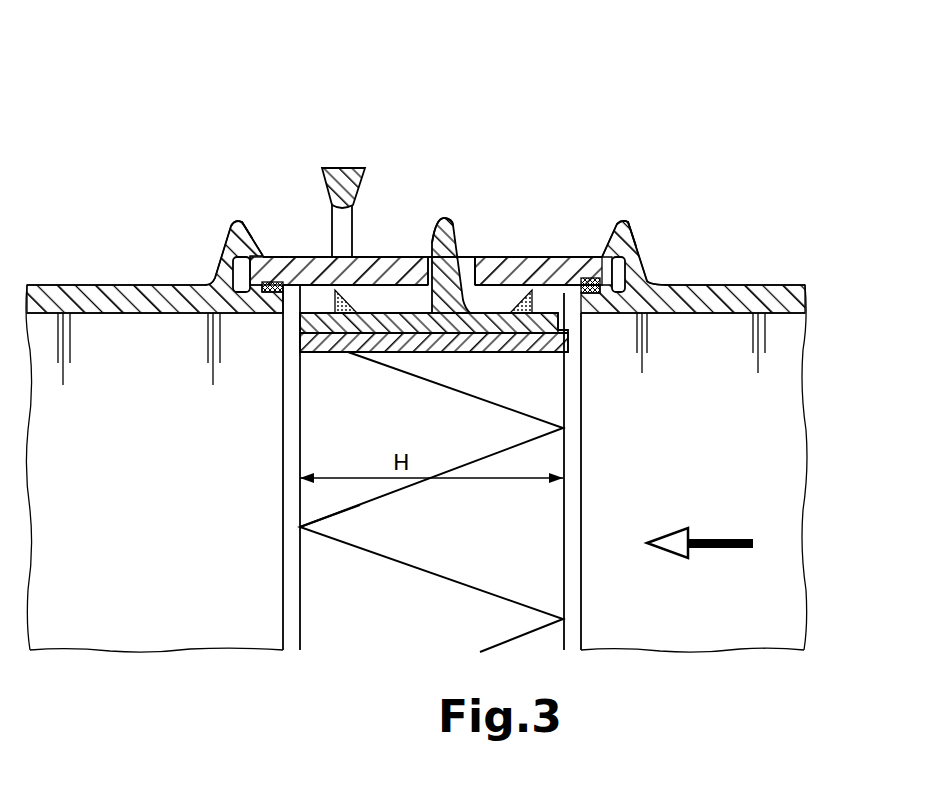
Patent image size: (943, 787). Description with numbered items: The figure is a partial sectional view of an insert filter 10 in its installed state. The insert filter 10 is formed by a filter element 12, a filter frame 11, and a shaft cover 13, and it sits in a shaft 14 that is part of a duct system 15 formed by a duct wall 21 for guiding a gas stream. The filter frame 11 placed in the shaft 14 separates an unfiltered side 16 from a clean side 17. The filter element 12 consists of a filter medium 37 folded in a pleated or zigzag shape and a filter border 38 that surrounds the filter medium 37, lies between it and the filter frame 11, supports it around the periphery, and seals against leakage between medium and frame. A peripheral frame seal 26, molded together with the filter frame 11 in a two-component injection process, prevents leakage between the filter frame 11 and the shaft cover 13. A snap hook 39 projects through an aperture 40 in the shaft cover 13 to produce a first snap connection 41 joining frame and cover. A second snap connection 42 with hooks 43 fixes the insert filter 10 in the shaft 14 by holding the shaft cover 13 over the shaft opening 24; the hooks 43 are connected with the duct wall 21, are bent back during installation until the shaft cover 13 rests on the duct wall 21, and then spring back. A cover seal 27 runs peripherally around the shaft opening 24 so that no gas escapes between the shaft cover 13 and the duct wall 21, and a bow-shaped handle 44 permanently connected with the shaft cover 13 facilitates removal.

The insert filter 10 is at (533, 122).
The filter frame 11 is at (566, 318).
The filter element 12 is at (528, 594).
The shaft cover 13 is at (555, 257).
The shaft 14 is at (290, 418).
The duct system 15 is at (190, 160).
The unfiltered side 16 is at (695, 590).
The clean side 17 is at (128, 585).
The duct wall 21 is at (122, 285).
The shaft opening 24 is at (284, 313).
The frame seal 26 is at (342, 298).
The cover seal 27 is at (590, 294).
The filter medium 37 is at (320, 515).
The filter border 38 is at (300, 352).
The snap hook 39 is at (447, 240).
The aperture 40 is at (463, 262).
The first snap connection 41 is at (446, 198).
The second snap connection 42 is at (249, 210).
The hooks 43 is at (232, 237).
The handle 44 is at (345, 167).